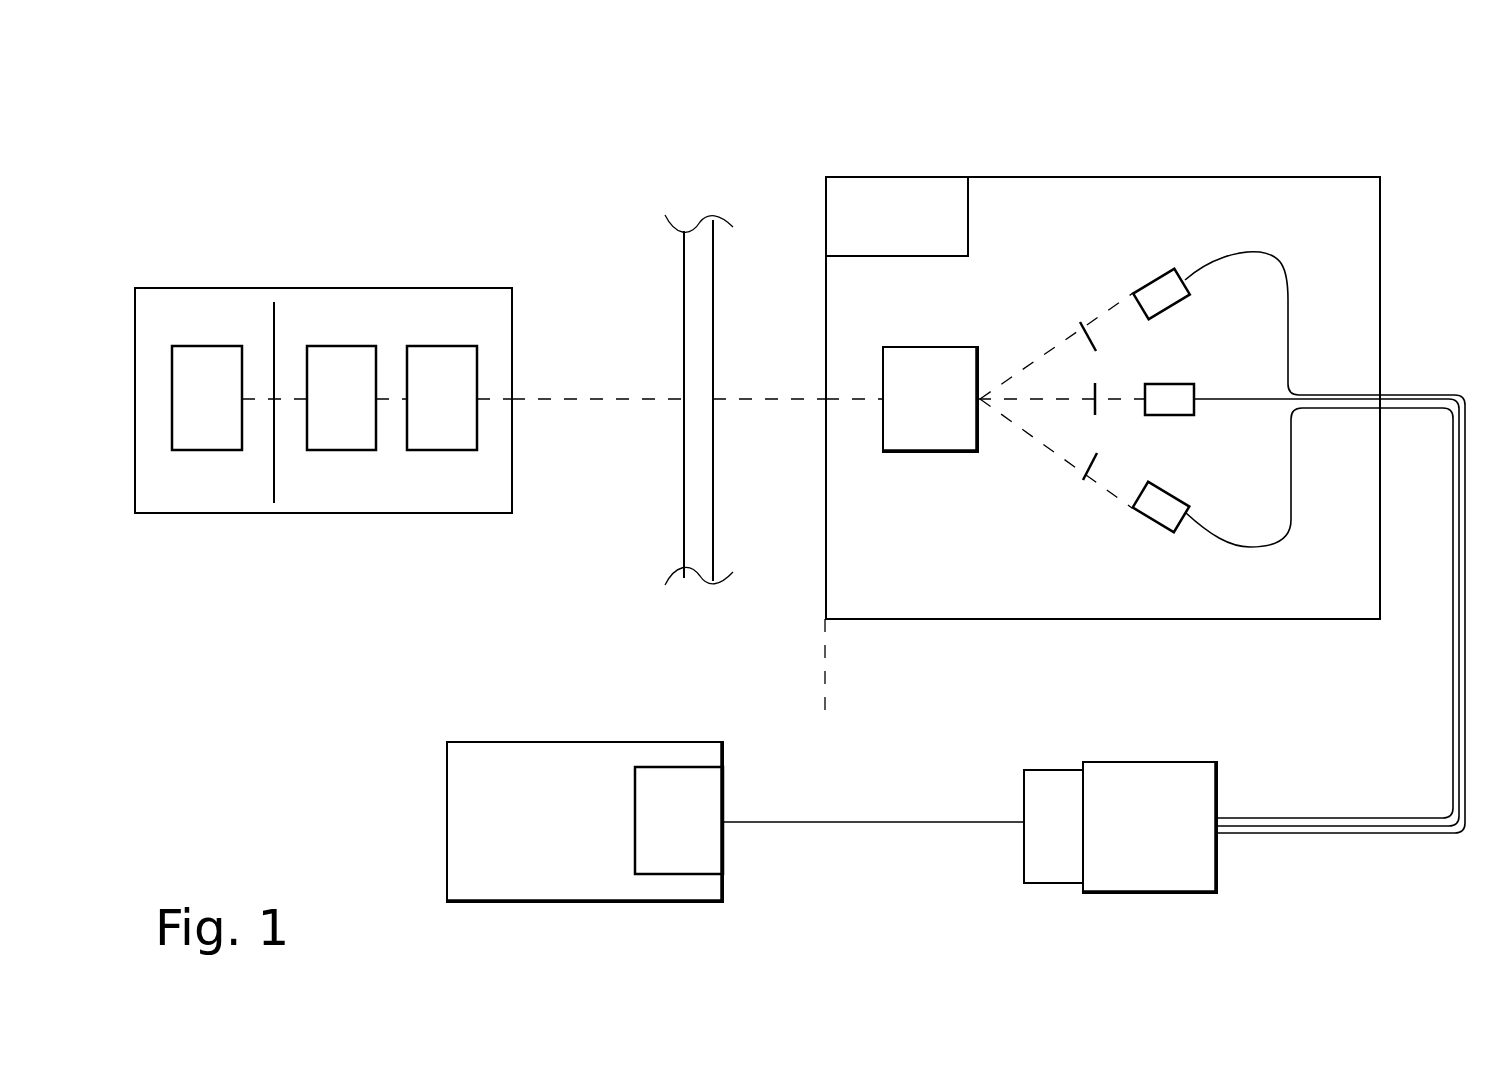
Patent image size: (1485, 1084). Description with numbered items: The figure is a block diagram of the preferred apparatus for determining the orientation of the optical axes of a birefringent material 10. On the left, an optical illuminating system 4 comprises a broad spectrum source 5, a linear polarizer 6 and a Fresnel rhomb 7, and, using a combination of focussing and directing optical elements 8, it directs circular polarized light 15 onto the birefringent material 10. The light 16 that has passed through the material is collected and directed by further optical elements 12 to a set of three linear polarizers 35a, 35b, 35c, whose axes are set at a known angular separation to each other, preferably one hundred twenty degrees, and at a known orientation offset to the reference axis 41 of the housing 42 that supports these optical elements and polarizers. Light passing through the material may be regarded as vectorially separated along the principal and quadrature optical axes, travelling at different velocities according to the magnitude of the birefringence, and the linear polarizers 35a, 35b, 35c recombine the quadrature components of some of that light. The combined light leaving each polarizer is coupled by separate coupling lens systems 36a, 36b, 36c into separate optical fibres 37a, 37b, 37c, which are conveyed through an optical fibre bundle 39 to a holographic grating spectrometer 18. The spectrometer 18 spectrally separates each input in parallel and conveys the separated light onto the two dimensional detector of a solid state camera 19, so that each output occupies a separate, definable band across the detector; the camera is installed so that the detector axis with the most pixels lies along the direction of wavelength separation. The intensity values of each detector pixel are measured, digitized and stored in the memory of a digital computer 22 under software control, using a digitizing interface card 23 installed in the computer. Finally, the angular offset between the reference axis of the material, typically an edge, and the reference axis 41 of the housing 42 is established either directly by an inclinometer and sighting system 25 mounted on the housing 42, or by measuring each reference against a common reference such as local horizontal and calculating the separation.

The optical illuminating system 4 is at (460, 515).
The broad spectrum source 5 is at (190, 357).
The linear polarizer 6 is at (274, 503).
The Fresnel rhomb 7 is at (337, 357).
The focussing and directing optical elements 8 is at (452, 360).
The birefringent material 10 is at (702, 242).
The further optical elements 12 is at (958, 437).
The circular polarized light 15 is at (555, 399).
The light that has passed through the birefringent material 16 is at (723, 399).
The holographic grating spectrometer 18 is at (1162, 867).
The solid state camera 19 is at (1043, 785).
The digital computer 22 is at (550, 757).
The digitizing interface card 23 is at (702, 837).
The inclinometer and sighting system 25 is at (937, 198).
The linear polarizer 35a is at (1086, 323).
The linear polarizer 35b is at (1095, 415).
The linear polarizer 35c is at (1087, 480).
The coupling lens system 36a is at (1148, 293).
The coupling lens system 36b is at (1168, 390).
The coupling lens system 36c is at (1145, 508).
The optical fibre 37a is at (1289, 273).
The optical fibre 37b is at (1255, 397).
The optical fibre 37c is at (1258, 548).
The optical fibre bundle 39 is at (1455, 728).
The reference axis 41 is at (829, 668).
The housing 42 is at (1102, 187).